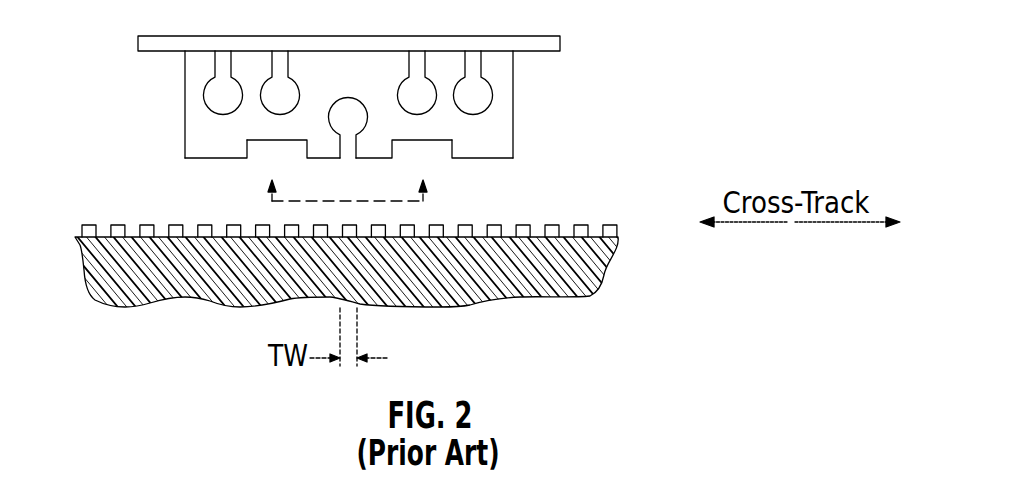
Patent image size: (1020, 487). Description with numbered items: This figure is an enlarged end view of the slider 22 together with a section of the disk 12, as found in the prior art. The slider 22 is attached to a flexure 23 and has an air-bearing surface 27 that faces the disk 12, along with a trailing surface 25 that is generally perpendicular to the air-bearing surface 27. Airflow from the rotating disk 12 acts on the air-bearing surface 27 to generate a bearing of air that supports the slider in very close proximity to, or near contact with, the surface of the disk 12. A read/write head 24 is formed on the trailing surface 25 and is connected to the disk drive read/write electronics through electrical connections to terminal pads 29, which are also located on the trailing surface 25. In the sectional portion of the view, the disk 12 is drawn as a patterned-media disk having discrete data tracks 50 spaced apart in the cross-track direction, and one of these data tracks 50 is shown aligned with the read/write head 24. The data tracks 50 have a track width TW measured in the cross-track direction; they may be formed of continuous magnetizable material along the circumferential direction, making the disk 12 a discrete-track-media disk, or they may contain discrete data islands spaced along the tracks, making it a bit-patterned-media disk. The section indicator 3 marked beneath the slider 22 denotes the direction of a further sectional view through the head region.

The disk 12 is at (609, 262).
The slider 22 is at (513, 128).
The flexure 23 is at (544, 37).
The read/write head 24 is at (347, 101).
The trailing surface 25 is at (200, 127).
The air-bearing surface 27 is at (217, 162).
The terminal pads 29 is at (264, 95).
The section line 3 is at (348, 175).
The discrete data tracks 50 is at (113, 225).